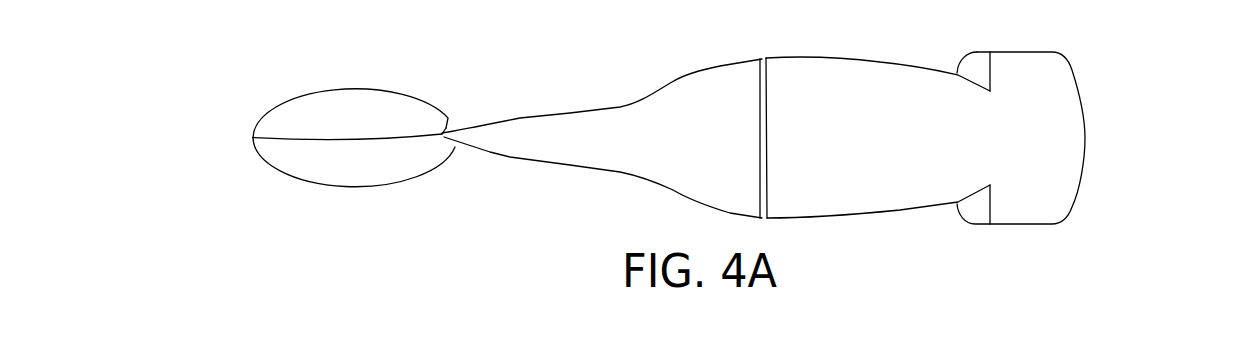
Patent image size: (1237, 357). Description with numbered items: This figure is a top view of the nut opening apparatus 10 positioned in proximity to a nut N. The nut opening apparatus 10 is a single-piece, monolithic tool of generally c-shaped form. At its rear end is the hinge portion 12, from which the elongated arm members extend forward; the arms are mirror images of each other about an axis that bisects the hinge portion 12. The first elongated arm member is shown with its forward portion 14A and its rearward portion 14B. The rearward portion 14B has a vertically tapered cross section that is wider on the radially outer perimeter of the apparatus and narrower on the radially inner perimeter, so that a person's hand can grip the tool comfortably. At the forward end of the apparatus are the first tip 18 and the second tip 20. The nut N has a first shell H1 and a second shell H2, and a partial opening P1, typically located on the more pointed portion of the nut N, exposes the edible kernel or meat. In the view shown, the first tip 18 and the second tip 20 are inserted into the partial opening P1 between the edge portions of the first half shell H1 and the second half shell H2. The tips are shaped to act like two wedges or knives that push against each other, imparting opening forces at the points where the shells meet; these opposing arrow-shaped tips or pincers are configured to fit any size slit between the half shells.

The nut opening apparatus 10 is at (684, 64).
The hinge portion 12 is at (1067, 153).
The forward portion of first elongated arm member 14A is at (655, 122).
The rearward portion of first elongated arm member 14B is at (880, 110).
The first tip 18 is at (468, 133).
The second tip 20 is at (487, 137).
The partial opening P1 is at (447, 127).
The nut N is at (236, 137).
The first shell H1 is at (362, 95).
The second shell H2 is at (333, 173).